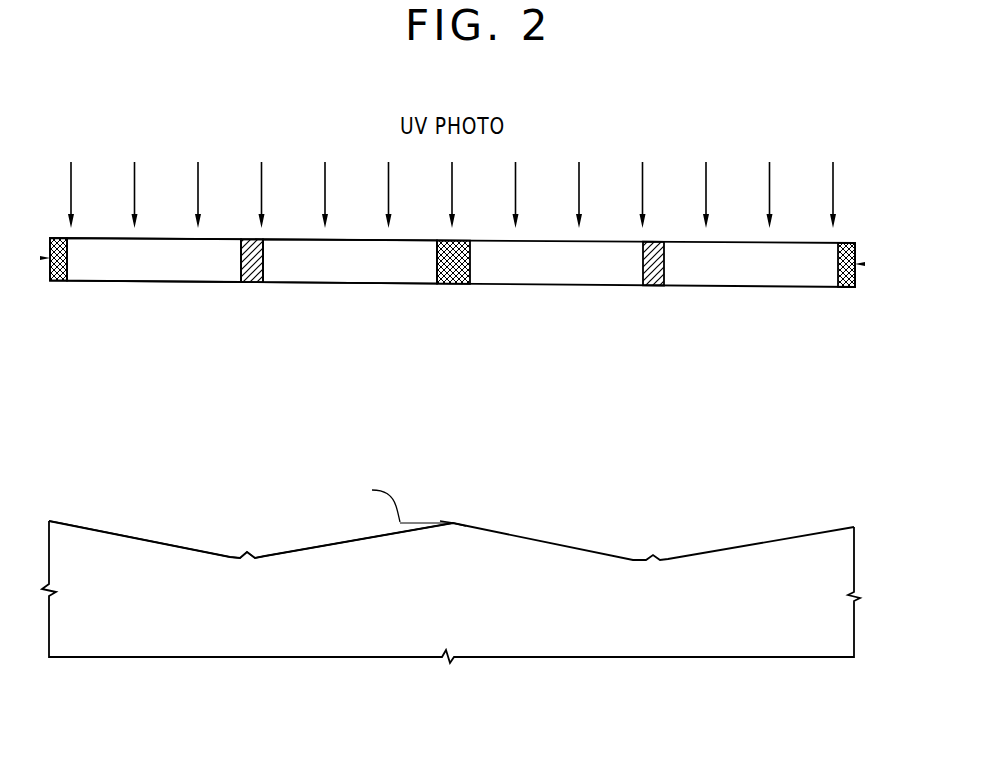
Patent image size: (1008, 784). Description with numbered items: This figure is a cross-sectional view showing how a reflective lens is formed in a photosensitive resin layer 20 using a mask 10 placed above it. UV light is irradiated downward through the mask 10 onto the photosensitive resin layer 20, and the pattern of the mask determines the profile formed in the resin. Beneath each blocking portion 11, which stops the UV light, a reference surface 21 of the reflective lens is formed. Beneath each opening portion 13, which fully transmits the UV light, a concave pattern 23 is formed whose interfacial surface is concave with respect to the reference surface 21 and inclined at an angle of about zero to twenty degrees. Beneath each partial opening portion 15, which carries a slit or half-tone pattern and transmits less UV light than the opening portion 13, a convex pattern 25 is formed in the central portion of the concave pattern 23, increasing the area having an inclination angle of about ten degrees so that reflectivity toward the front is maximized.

The mask 10 is at (703, 302).
The blocking portion 11 is at (58, 282).
The opening portion 13 is at (147, 282).
The partial opening portion 15 is at (253, 283).
The photosensitive resin layer 20 is at (838, 627).
The reference surface 21 is at (54, 520).
The concave pattern 23 is at (148, 540).
The convex pattern 25 is at (252, 551).